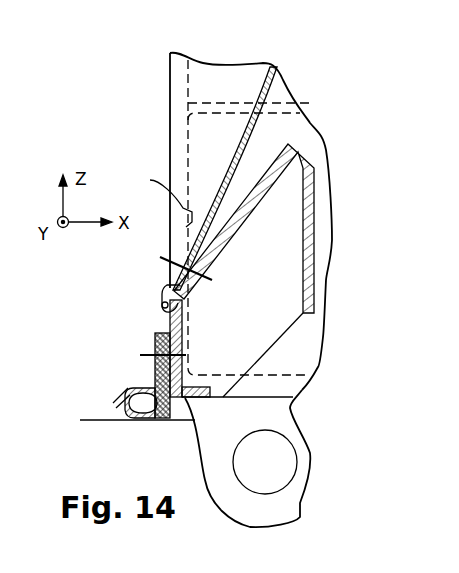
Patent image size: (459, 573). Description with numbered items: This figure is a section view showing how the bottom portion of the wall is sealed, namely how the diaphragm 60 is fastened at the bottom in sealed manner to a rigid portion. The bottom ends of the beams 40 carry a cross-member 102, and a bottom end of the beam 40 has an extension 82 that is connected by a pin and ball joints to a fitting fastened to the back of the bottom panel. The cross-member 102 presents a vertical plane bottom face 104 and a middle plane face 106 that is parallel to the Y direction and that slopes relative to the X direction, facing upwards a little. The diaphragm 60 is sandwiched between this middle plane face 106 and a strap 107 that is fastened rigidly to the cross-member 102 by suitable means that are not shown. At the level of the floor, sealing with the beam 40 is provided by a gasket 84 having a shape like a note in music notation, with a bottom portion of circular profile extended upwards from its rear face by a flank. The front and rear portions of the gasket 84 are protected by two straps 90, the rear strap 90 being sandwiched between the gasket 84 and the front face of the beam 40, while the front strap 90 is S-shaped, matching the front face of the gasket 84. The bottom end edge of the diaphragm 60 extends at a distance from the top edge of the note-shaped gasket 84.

The beam 40 is at (180, 80).
The diaphragm 60 is at (267, 130).
The cross-member 102 is at (277, 218).
The strap 107 is at (150, 180).
The middle plane face 106 is at (187, 270).
The vertical plane bottom face 104 is at (157, 339).
The strap 90 is at (123, 390).
The gasket 84 is at (123, 423).
The extension 82 is at (277, 507).